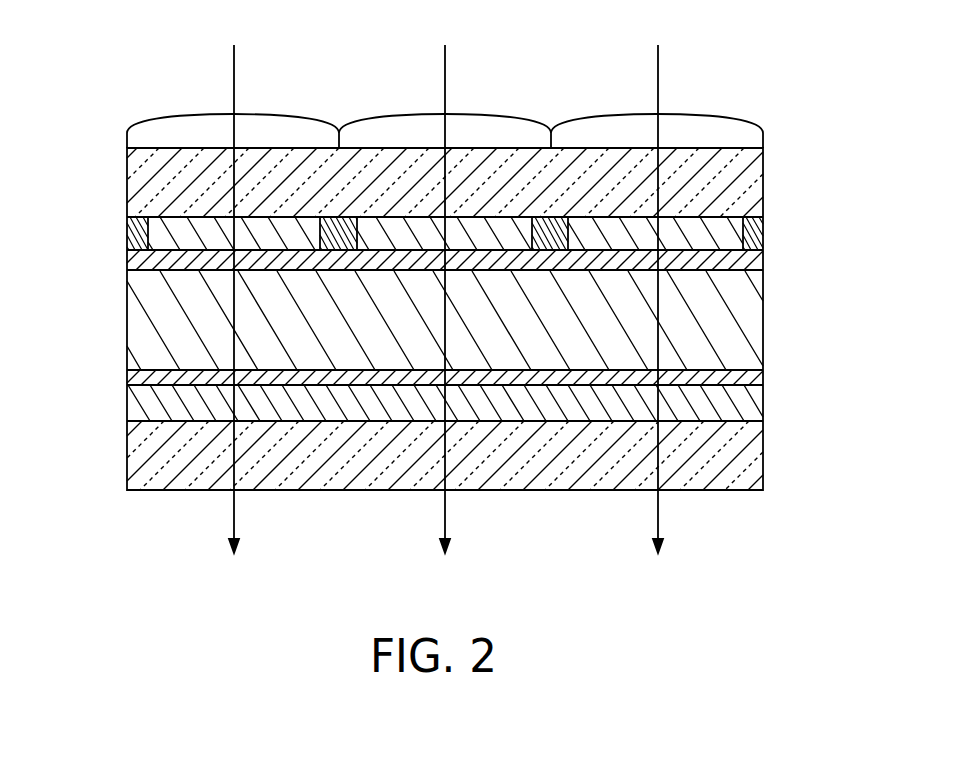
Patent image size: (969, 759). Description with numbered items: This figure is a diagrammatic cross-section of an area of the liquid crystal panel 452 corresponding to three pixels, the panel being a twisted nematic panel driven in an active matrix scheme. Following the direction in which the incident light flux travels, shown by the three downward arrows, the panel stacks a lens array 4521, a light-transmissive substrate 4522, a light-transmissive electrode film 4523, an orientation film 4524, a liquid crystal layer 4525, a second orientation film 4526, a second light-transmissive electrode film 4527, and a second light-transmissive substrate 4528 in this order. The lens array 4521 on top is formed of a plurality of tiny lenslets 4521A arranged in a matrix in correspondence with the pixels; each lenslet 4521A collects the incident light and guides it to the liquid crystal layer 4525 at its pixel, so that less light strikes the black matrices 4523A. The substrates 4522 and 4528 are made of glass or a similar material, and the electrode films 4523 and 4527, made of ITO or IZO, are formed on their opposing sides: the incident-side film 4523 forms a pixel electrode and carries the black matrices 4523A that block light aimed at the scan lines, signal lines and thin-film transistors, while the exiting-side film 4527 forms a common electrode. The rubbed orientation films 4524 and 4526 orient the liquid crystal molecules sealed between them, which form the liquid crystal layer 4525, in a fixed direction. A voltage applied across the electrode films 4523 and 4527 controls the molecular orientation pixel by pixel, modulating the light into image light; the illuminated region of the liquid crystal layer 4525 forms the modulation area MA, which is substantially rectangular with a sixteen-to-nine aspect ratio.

The liquid crystal panel 452 is at (819, 112).
The modulation area MA is at (134, 79).
The lens array 4521 is at (720, 118).
The lenslet 4521A is at (698, 113).
The light-transmissive substrate 4522 is at (757, 165).
The light-transmissive electrode film 4523 is at (748, 242).
The black matrix 4523A is at (763, 228).
The orientation film 4524 is at (757, 262).
The liquid crystal layer 4525 is at (752, 328).
The orientation film 4526 is at (752, 376).
The light-transmissive electrode film 4527 is at (752, 405).
The light-transmissive substrate 4528 is at (752, 453).